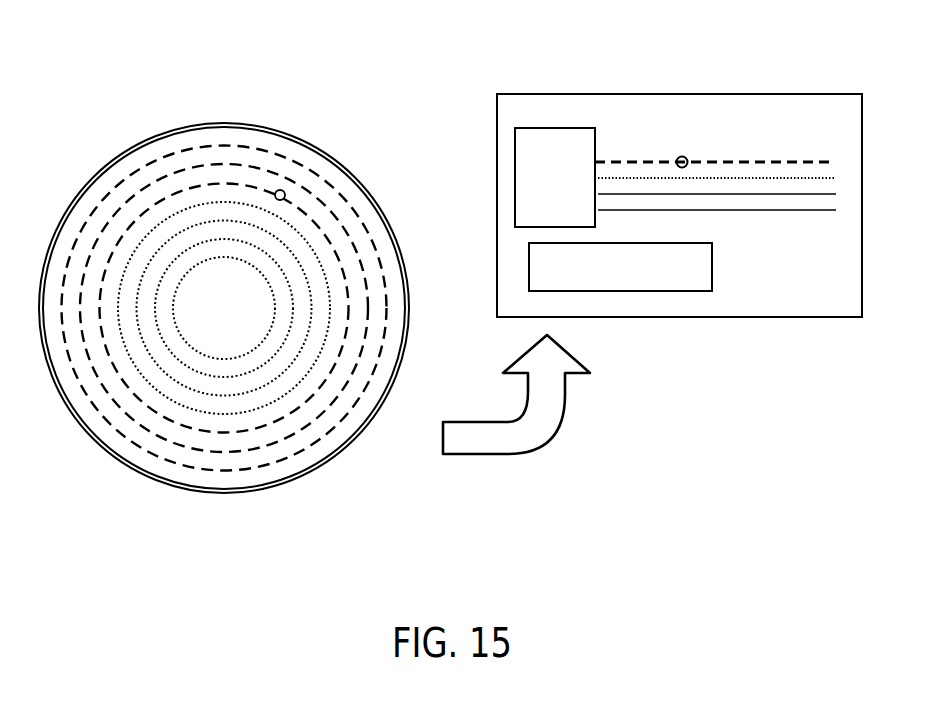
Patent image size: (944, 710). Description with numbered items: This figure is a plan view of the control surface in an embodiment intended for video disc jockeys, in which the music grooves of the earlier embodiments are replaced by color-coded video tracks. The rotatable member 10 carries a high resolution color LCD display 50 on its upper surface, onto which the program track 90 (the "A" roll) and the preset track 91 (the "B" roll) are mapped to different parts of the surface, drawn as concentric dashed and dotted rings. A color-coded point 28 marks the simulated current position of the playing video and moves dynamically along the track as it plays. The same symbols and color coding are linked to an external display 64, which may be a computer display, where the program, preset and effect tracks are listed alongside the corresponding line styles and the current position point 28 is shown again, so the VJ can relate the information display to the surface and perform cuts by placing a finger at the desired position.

The rotatable member 10 is at (233, 293).
The current position point 28 is at (280, 190).
The high resolution color LCD display 50 is at (345, 190).
The program track 90 is at (343, 417).
The preset track 91 is at (210, 410).
The external display 64 is at (606, 93).